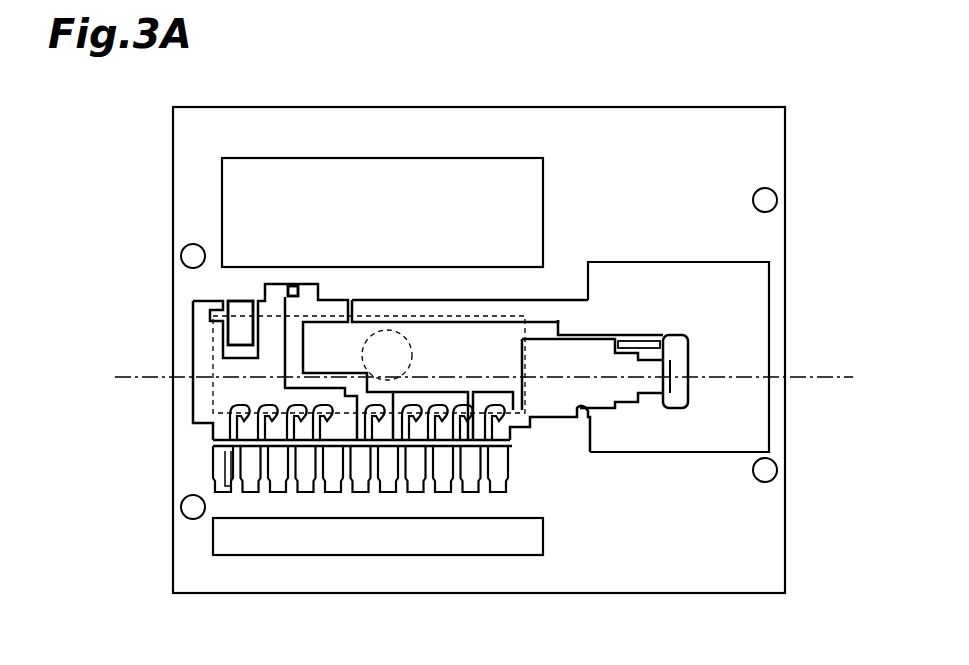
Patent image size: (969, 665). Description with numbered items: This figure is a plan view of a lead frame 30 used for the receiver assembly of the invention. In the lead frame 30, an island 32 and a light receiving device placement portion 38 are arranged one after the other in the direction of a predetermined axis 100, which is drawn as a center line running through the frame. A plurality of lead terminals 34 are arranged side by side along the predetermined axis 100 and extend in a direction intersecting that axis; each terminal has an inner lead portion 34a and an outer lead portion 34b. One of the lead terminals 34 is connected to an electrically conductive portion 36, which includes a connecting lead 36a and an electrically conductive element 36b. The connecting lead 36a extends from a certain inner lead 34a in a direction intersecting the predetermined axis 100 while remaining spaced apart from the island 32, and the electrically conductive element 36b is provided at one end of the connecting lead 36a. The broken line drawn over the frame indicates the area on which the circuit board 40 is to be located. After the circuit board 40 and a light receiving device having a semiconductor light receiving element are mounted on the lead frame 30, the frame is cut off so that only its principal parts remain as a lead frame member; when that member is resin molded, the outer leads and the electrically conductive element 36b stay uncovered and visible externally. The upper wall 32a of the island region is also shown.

The lead frame 30 is at (460, 593).
The island 32 is at (470, 313).
The housing upper wall 32a is at (443, 345).
The lead terminals 34 is at (93, 430).
The inner lead portion 34a is at (215, 468).
The outer lead portion 34b is at (213, 425).
The electrically conductive portion 36 is at (377, 199).
The connecting lead 36a is at (284, 360).
The electrically conductive element 36b is at (295, 293).
The light receiving device placement portion 38 is at (637, 384).
The circuit board 40 is at (212, 358).
The predetermined axis 100 is at (808, 378).